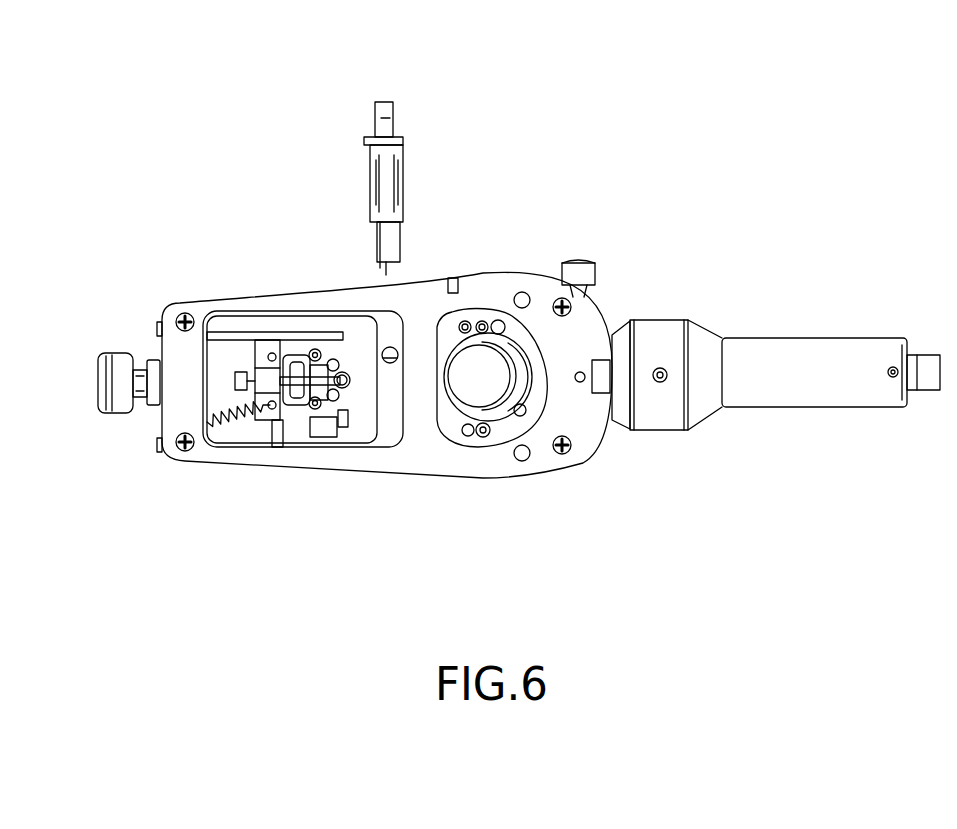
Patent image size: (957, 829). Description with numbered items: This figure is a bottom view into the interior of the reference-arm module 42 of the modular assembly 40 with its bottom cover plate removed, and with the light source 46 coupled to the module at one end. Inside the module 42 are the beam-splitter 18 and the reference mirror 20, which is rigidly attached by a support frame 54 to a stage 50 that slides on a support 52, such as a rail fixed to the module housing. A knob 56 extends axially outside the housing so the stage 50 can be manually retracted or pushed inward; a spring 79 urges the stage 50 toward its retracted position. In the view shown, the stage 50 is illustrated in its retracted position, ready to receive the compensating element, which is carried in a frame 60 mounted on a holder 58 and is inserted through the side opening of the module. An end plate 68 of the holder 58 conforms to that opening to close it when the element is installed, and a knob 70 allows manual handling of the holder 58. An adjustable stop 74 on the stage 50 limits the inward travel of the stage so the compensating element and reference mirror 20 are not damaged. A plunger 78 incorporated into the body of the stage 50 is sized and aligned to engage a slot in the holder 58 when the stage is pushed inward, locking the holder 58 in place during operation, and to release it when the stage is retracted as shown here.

The beam-splitter 18 is at (477, 377).
The reference mirror 20 is at (310, 398).
The modular assembly 40 is at (588, 113).
The reference-arm module 42 is at (596, 455).
The light source 46 is at (767, 338).
The stage 50 is at (217, 352).
The support 52 is at (343, 422).
The support frame 54 is at (265, 370).
The knob 56 is at (110, 373).
The holder 58 is at (403, 158).
The frame 60 is at (390, 240).
The end plate 68 is at (364, 141).
The knob 70 is at (383, 102).
The adjustable stop 74 is at (233, 380).
The plunger 78 is at (323, 345).
The spring 79 is at (225, 450).